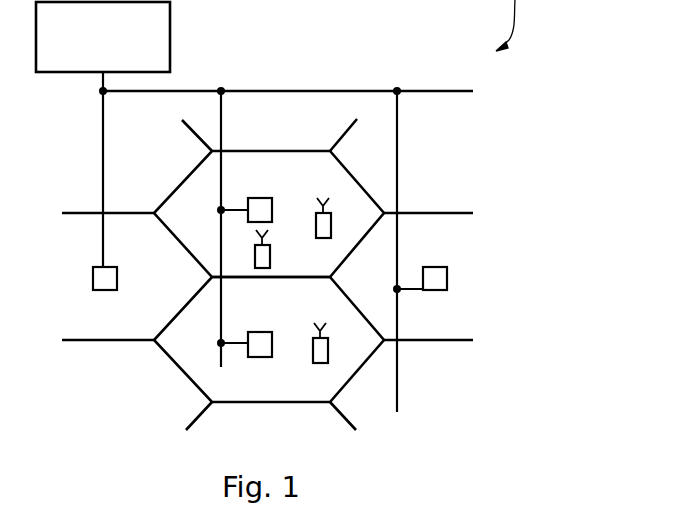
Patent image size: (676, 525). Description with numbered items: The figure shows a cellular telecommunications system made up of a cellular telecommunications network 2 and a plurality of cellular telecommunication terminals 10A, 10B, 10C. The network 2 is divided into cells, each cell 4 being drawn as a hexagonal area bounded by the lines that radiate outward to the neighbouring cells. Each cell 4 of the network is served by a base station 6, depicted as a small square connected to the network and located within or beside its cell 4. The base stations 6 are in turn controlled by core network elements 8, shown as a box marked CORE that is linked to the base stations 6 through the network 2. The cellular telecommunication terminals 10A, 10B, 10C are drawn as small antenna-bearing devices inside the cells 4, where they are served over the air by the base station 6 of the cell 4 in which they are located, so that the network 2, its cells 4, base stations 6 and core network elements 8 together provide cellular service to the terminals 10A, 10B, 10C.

The cellular telecommunications network 2 is at (345, 64).
The cell 4 is at (332, 185).
The base station 6 is at (93, 278).
The core network elements 8 is at (111, 63).
The cellular telecommunication terminal 10A is at (314, 222).
The cellular telecommunication terminal 10B is at (271, 252).
The cellular telecommunication terminal 10C is at (313, 348).